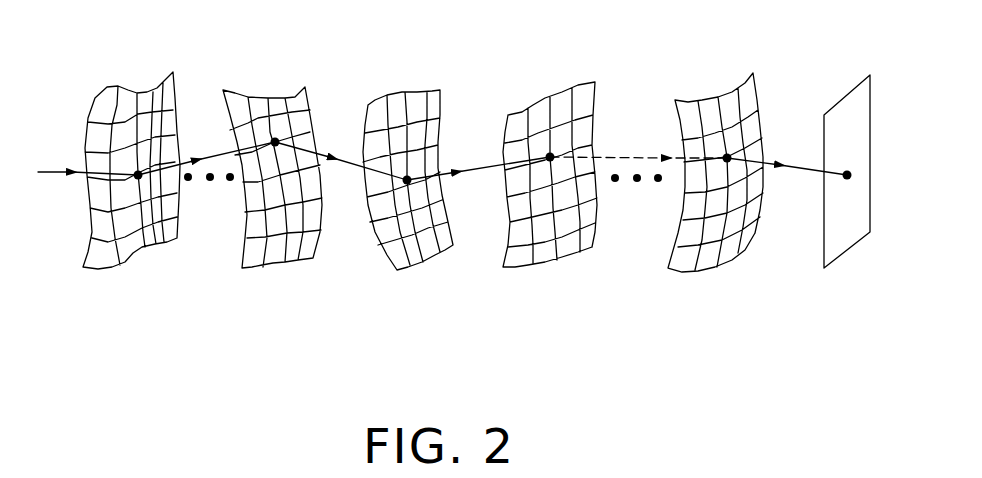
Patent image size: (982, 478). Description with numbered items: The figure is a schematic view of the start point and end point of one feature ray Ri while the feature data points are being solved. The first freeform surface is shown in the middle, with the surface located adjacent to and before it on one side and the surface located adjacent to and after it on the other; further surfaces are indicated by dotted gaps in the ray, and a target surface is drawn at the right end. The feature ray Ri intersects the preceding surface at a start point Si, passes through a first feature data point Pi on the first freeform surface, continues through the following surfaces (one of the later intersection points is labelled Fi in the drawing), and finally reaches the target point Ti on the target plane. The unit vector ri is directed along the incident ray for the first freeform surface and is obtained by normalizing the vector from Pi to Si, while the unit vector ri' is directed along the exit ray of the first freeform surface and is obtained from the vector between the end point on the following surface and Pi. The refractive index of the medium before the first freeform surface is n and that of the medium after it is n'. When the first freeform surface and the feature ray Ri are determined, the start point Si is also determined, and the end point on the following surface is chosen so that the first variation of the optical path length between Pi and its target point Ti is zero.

The feature ray Ri is at (88, 161).
The start point Si is at (208, 159).
The unit vector along the incident ray direction ri is at (341, 167).
The first feature data point Pi is at (407, 169).
The unit vector along the exit ray direction ri' is at (478, 177).
The point on following surface Fi is at (632, 171).
The target point Ti is at (802, 205).
The refractive index of the medium before the first freeform surface n is at (333, 96).
The refractive index of the medium after the first freeform surface n' is at (472, 98).